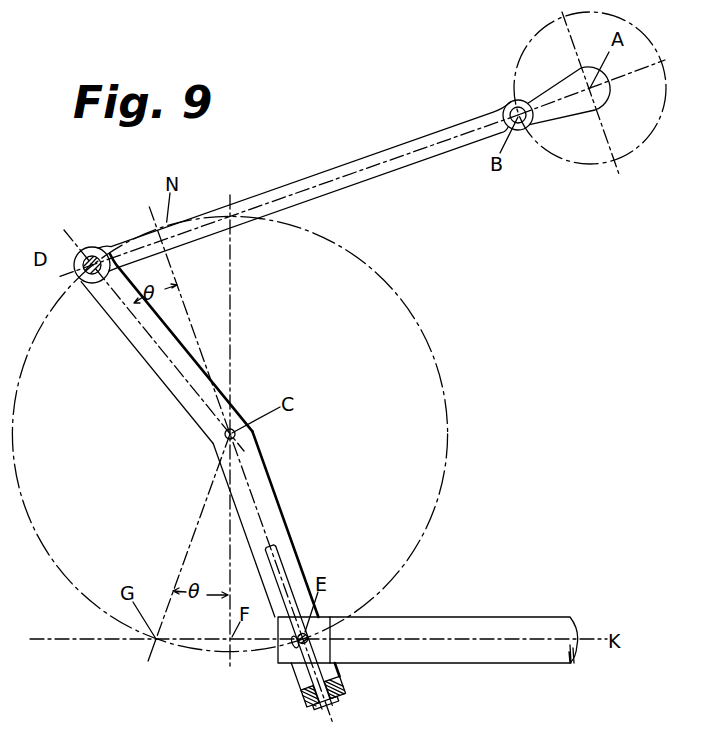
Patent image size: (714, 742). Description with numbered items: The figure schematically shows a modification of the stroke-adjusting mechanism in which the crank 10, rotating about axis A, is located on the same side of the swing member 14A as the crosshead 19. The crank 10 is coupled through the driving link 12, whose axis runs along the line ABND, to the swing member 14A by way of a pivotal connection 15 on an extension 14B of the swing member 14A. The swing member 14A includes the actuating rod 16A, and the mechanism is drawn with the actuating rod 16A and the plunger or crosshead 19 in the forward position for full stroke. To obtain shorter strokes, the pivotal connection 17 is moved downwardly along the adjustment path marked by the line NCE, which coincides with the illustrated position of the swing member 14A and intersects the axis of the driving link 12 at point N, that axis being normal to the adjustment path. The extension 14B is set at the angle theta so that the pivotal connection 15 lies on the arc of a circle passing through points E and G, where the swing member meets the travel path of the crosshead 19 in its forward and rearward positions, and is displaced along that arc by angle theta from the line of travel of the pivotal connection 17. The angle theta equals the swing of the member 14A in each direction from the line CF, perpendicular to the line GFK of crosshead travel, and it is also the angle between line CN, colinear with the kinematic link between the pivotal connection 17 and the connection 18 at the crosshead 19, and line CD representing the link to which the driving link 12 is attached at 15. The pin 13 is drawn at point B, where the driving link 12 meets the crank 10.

The crank 10 is at (555, 90).
The driving link 12 is at (355, 165).
The pivot pin B 13 is at (505, 102).
The swing member 14A is at (267, 508).
The extension of the swing member 14B is at (141, 340).
The pivotal connection 15 is at (96, 247).
The actuating rod 16A is at (285, 558).
The pivotal connection 17 is at (226, 437).
The pivot pin E 18 is at (299, 641).
The crosshead 19 is at (505, 622).